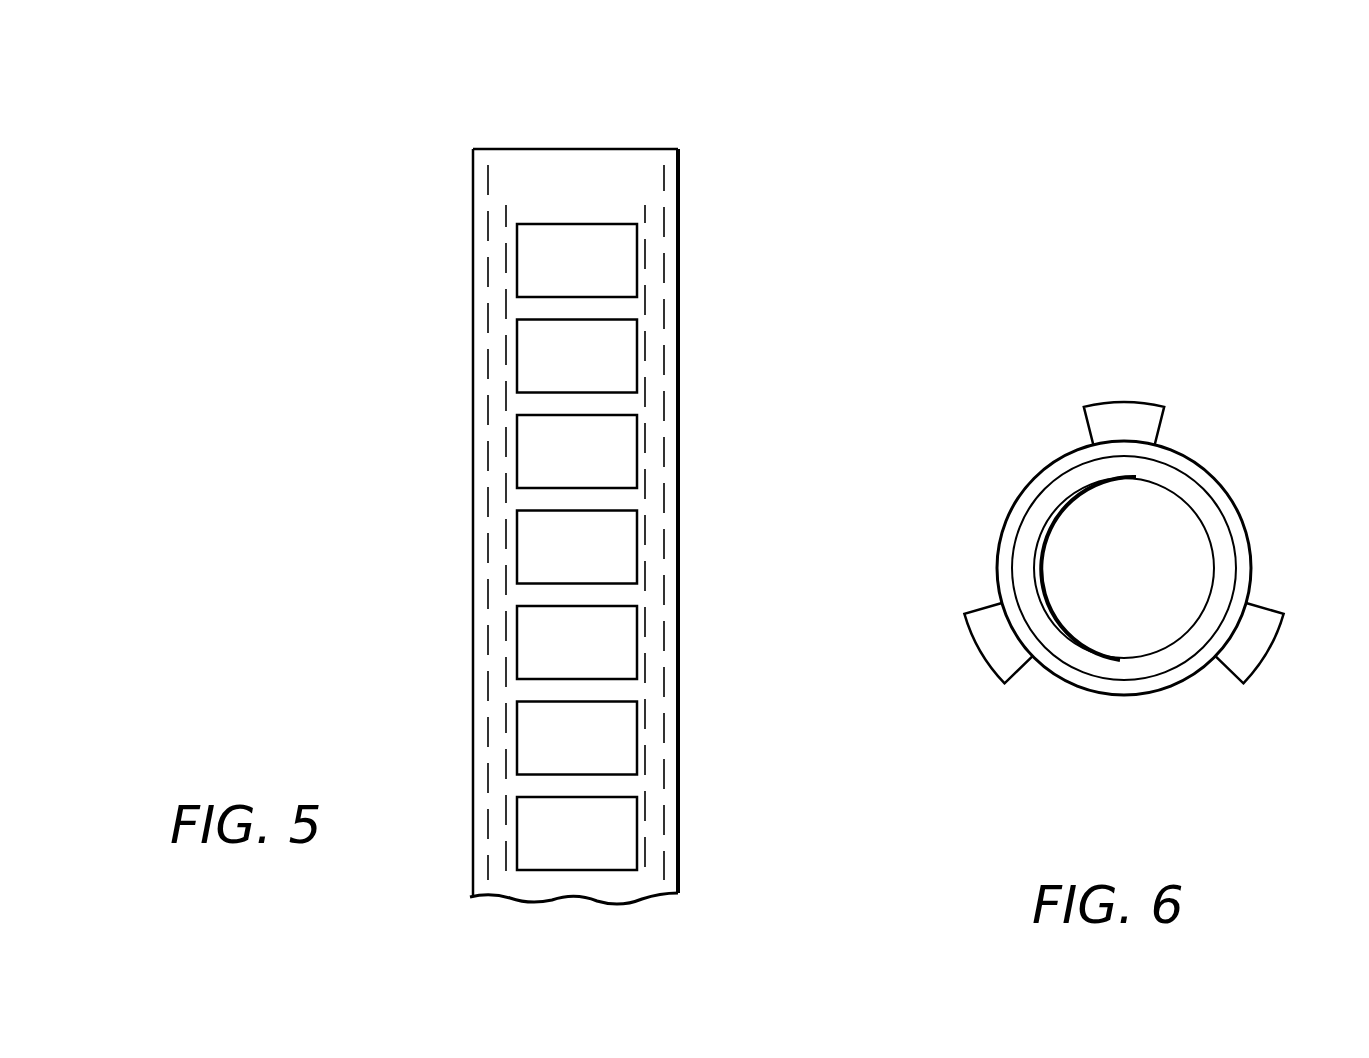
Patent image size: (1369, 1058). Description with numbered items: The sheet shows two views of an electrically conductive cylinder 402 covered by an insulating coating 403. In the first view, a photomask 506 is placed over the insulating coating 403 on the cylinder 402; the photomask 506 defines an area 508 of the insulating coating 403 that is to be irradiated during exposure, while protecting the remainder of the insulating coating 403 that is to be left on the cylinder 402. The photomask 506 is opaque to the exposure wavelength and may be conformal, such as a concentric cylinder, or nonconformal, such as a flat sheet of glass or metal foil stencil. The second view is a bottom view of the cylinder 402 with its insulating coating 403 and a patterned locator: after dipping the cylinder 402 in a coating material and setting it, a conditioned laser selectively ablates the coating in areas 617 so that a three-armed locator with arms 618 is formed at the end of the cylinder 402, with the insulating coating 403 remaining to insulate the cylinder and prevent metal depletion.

In FIG. 5, the cylinder 402 is at (645, 158).
In FIG. 6, the cylinder 402 is at (1198, 513).
In FIG. 5, the insulating coating 403 is at (660, 174).
In FIG. 6, the insulating coating 403 is at (1242, 555).
In FIG. 5, the photomask 506 is at (680, 328).
In FIG. 5, the area 508 is at (605, 270).
In FIG. 6, the areas 617 is at (1127, 695).
In FIG. 6, the locator arms 618 is at (1097, 393).